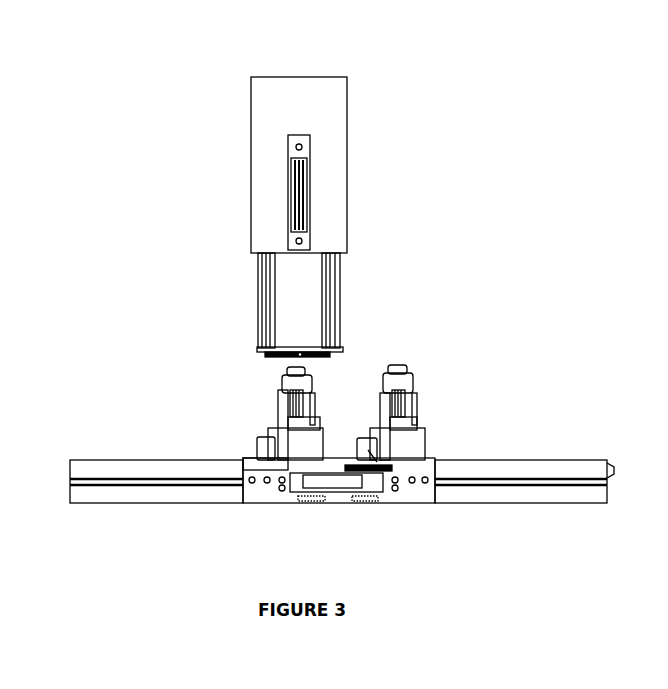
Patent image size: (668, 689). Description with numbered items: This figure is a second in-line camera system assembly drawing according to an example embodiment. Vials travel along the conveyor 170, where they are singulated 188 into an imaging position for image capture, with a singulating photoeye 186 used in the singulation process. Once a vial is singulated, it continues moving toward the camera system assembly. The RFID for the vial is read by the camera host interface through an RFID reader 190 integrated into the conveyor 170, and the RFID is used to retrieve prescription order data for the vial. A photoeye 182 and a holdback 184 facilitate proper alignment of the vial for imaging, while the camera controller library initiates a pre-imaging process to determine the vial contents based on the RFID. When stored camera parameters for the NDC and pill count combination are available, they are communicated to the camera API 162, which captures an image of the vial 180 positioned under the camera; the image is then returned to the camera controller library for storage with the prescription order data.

The camera API 162 is at (299, 204).
The conveyor 170 is at (87, 512).
The vial 180 is at (282, 379).
The photoeye 182 is at (292, 400).
The holdback 184 is at (266, 481).
The singulating photoeye 186 is at (408, 396).
The singulated 188 is at (434, 489).
The RFID reader 190 is at (332, 480).